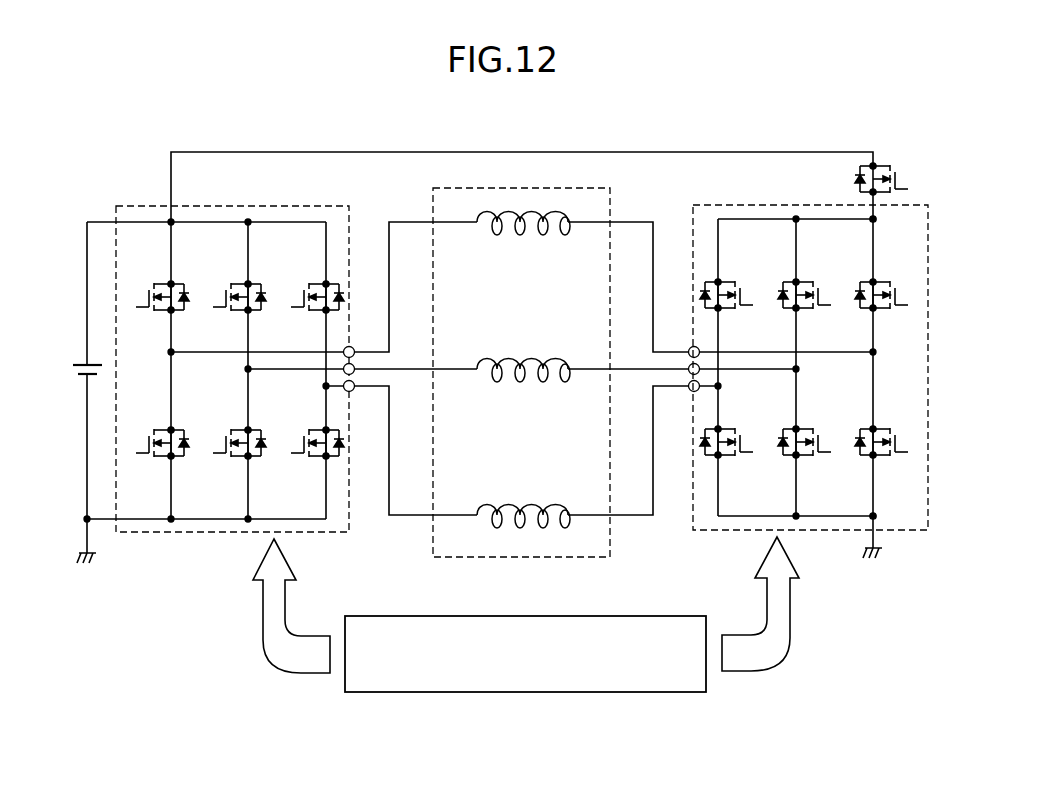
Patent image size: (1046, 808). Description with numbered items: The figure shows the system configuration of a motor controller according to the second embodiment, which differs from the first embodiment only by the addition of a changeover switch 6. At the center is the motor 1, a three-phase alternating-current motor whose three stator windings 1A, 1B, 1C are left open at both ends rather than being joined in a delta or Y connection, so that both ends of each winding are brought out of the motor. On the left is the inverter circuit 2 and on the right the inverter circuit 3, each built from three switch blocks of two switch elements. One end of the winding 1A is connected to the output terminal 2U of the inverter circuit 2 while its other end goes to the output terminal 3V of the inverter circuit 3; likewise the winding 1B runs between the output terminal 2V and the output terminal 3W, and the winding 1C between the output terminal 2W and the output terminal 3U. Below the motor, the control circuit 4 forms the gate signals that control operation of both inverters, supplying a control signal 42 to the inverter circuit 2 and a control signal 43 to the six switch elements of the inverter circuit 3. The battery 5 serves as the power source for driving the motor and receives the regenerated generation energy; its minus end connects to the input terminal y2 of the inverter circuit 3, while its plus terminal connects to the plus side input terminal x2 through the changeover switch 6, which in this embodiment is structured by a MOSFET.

The motor 1 is at (521, 356).
The stator winding 1A is at (522, 234).
The stator winding 1B is at (522, 381).
The stator winding 1C is at (522, 527).
The inverter circuit 2 is at (181, 532).
The output terminal 2U is at (352, 347).
The output terminal 2V is at (354, 372).
The output terminal 2W is at (352, 391).
The inverter circuit 3 is at (829, 532).
The output terminal 3U is at (691, 391).
The output terminal 3V is at (692, 347).
The output terminal 3W is at (689, 372).
The control circuit 4 is at (658, 614).
The battery 5 is at (82, 362).
The changeover switch 6 is at (893, 165).
The control signal 42 is at (262, 636).
The control signal 43 is at (791, 636).
The input terminal x2 is at (870, 218).
The input terminal y2 is at (876, 518).